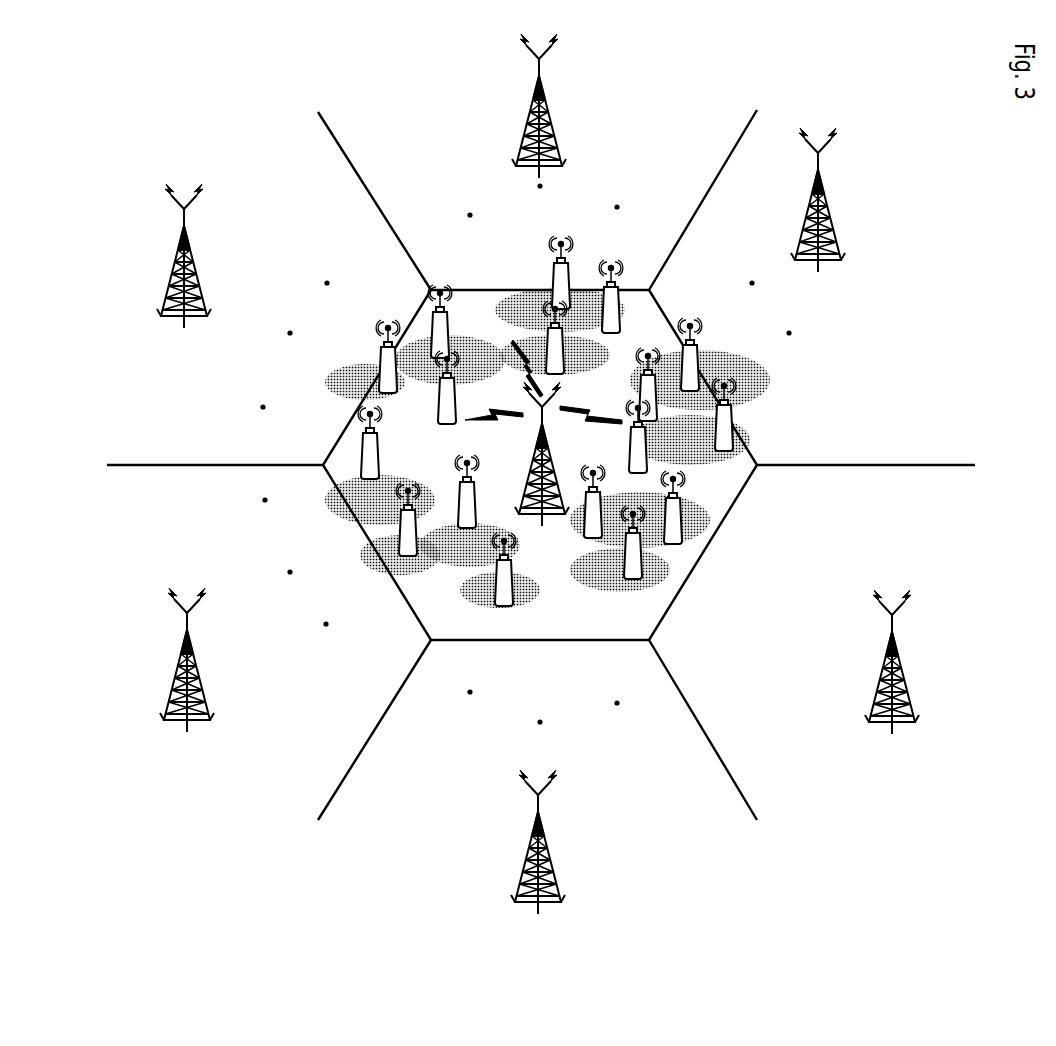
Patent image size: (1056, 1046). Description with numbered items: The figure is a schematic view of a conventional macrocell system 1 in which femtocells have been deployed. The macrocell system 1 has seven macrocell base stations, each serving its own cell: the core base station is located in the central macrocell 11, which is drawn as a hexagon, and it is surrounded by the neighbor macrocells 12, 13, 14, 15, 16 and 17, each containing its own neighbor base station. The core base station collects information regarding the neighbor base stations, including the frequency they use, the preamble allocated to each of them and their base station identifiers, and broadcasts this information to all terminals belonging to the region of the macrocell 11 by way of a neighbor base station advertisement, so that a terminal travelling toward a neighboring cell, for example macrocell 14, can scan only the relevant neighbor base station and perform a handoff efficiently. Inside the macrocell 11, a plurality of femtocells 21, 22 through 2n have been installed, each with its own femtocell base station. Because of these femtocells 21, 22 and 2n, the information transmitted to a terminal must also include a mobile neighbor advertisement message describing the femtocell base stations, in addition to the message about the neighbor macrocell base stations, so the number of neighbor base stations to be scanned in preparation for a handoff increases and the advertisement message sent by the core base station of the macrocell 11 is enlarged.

The macrocell system 1 is at (893, 108).
The macrocell 11 is at (527, 502).
The macrocell 12 is at (528, 121).
The macrocell 13 is at (828, 213).
The macrocell 14 is at (903, 673).
The macrocell 15 is at (520, 880).
The macrocell 16 is at (178, 672).
The macrocell 17 is at (173, 270).
The femtocell 21 is at (730, 527).
The femtocell 22 is at (660, 588).
The femtocell 2n is at (778, 437).